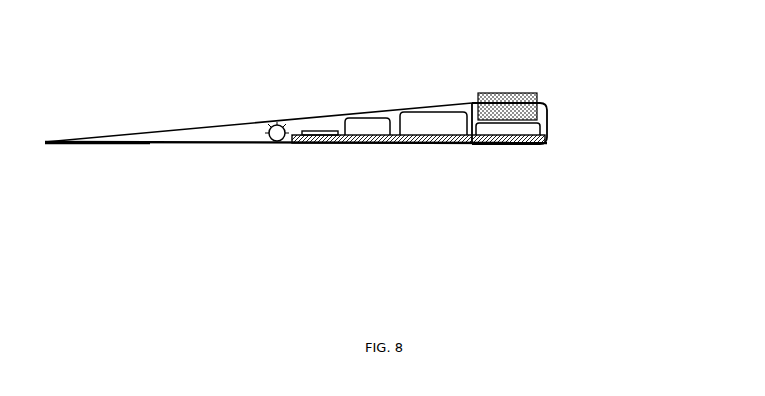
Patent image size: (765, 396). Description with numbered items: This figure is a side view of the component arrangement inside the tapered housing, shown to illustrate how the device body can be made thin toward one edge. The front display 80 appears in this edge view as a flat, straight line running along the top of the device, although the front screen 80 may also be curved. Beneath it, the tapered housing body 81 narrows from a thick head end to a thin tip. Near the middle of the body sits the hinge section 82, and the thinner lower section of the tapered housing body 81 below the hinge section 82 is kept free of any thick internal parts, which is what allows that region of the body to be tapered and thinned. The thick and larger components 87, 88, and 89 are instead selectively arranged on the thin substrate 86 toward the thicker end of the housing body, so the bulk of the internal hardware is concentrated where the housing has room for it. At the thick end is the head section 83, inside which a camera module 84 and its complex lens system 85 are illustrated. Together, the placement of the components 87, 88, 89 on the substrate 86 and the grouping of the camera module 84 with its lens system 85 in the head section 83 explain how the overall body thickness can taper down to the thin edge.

The front display 80 is at (212, 124).
The tapered housing body 81 is at (143, 147).
The hinge section 82 is at (282, 145).
The head section 83 is at (550, 123).
The camera module 84 is at (507, 128).
The lens system 85 is at (505, 93).
The thin substrate 86 is at (395, 148).
The internal component 87 is at (320, 130).
The internal component 88 is at (368, 117).
The internal component 89 is at (440, 110).